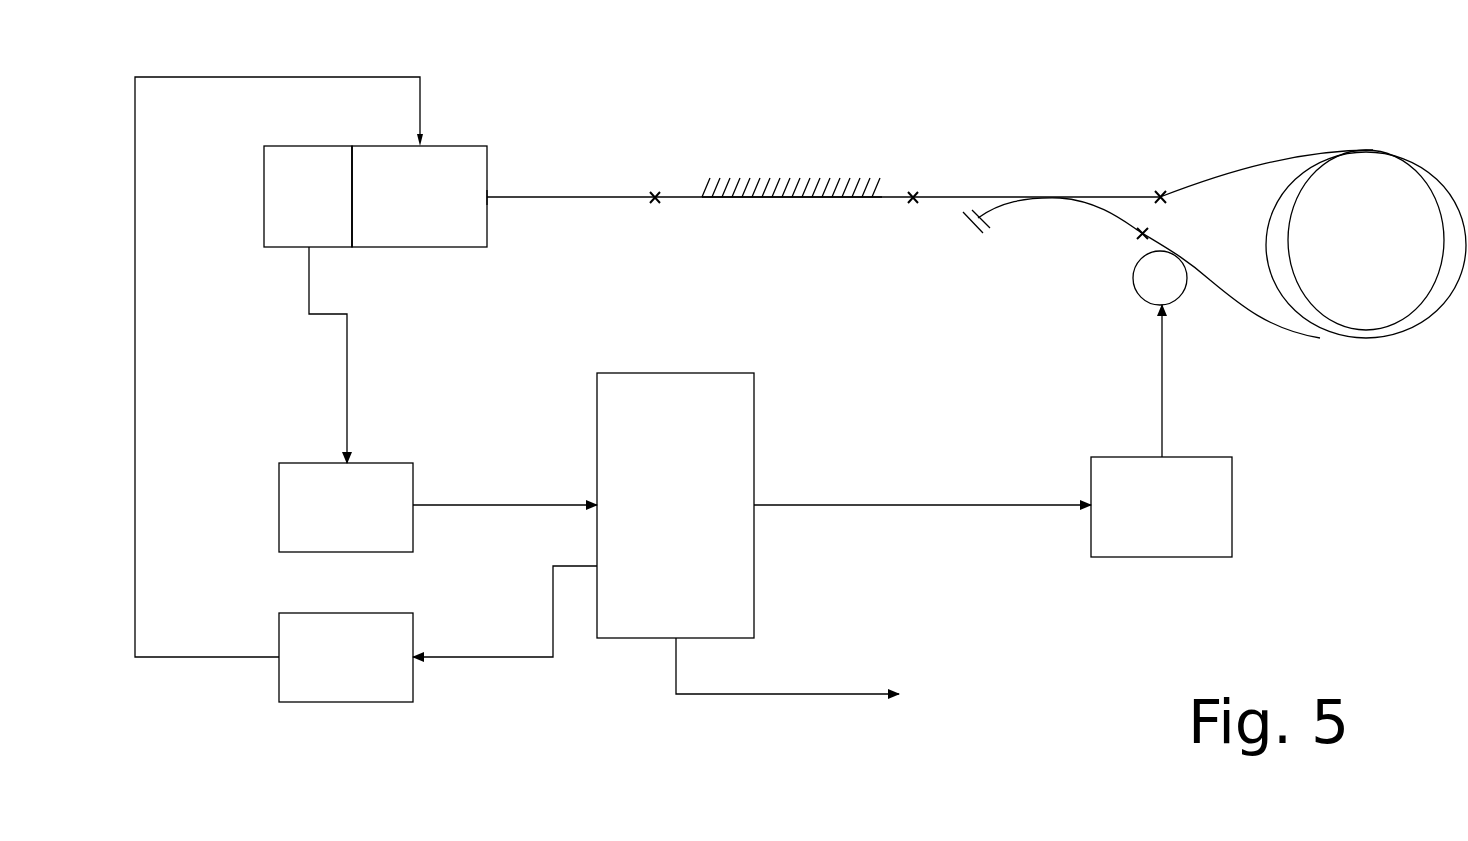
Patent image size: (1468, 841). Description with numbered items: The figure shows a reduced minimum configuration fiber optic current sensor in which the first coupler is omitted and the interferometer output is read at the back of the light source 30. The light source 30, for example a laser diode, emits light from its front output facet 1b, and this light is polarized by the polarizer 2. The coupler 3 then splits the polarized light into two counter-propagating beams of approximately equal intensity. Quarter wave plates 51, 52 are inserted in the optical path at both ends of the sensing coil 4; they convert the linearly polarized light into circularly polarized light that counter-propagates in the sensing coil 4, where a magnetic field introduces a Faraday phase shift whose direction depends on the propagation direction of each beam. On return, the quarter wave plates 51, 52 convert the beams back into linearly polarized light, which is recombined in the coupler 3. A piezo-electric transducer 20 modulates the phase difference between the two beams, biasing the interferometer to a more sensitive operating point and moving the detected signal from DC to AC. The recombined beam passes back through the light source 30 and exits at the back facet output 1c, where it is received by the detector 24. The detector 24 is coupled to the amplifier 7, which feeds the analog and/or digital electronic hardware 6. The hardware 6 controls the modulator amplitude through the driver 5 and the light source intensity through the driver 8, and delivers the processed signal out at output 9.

The front output facet 1b is at (489, 197).
The back facet output 1c is at (352, 146).
The polarizer 2 is at (737, 178).
The coupler 3 is at (1010, 197).
The sensing coil 4 is at (1378, 150).
The driver 5 is at (1232, 508).
The analog and/or digital electronic hardware 6 is at (676, 373).
The amplifier 7 is at (415, 537).
The driver 8 is at (318, 702).
The signal output 9 is at (861, 694).
The piezo-electric transducer 20 is at (1133, 279).
The detector 24 is at (274, 250).
The light source 30 is at (459, 153).
The quarter wave plate 51 is at (1157, 190).
The quarter wave plate 52 is at (1168, 236).